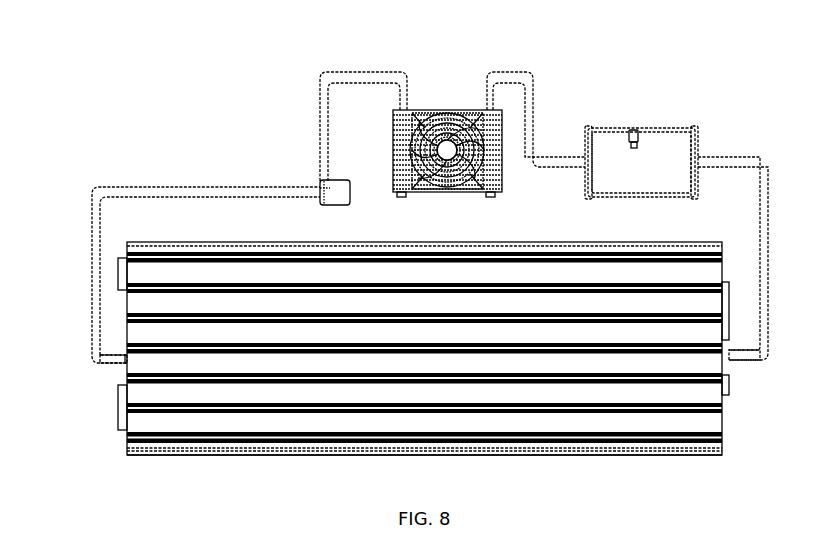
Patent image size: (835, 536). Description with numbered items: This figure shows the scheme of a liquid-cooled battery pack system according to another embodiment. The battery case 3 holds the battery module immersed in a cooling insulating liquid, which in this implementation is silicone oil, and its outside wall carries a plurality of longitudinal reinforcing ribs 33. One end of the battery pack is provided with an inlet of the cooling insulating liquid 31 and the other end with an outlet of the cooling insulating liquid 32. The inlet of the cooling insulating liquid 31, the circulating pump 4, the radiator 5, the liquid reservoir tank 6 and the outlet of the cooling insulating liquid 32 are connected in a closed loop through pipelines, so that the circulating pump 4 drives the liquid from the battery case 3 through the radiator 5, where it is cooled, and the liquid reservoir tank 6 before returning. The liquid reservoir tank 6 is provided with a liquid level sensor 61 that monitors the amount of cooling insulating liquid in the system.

The battery case 3 is at (148, 420).
The inlet of the cooling insulating liquid 31 is at (96, 355).
The outlet of the cooling insulating liquid 32 is at (764, 360).
The longitudinal reinforcing ribs 33 is at (663, 438).
The circulating pump 4 is at (322, 187).
The radiator 5 is at (462, 108).
The liquid reservoir tank 6 is at (672, 152).
The liquid level sensor 61 is at (631, 131).